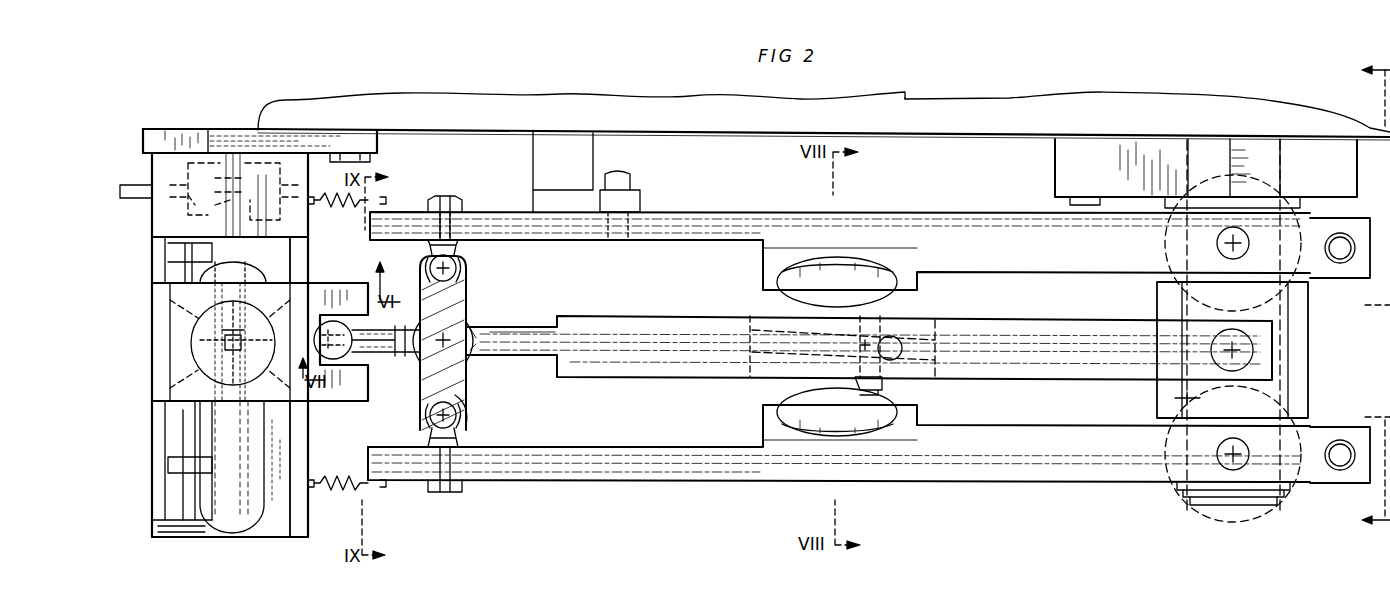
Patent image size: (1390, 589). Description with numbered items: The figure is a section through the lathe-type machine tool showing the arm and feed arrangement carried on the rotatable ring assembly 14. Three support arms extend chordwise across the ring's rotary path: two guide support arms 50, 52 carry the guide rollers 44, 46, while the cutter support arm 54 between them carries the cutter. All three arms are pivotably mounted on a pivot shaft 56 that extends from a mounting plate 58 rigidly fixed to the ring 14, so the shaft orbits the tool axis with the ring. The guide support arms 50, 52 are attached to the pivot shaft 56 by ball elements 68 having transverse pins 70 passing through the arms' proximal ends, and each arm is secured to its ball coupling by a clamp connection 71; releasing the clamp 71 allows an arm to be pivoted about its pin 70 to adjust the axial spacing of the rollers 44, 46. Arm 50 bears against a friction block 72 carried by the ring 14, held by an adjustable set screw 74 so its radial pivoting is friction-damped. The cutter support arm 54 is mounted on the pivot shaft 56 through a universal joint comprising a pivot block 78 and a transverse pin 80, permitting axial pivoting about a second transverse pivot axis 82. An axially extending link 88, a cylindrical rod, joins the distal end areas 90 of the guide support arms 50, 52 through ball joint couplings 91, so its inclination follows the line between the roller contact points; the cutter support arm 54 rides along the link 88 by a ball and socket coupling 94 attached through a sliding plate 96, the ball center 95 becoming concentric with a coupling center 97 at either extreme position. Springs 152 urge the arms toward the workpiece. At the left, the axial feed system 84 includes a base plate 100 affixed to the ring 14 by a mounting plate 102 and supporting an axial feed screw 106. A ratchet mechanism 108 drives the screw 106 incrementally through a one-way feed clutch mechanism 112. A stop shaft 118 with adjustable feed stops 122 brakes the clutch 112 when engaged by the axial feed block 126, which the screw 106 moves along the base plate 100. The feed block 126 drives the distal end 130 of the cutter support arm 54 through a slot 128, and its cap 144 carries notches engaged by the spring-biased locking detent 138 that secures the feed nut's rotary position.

The annular ring assembly 14 is at (660, 112).
The guide roller 44 is at (790, 287).
The guide roller 46 is at (790, 406).
The guide support arm 50 is at (990, 205).
The guide support arm 52 is at (990, 420).
The cutter support arm 54 is at (990, 318).
The pivot shaft 56 is at (1245, 507).
The mounting plate 58 is at (1334, 182).
The ball element 68 is at (1200, 280).
The transverse pin 70 is at (1222, 245).
The clamp connection 71 is at (1338, 279).
The friction block 72 is at (535, 164).
The set screw 74 is at (636, 178).
The pivot block 78 is at (1200, 397).
The transverse pin 80 is at (1225, 345).
The second transverse pivot axis 82 is at (1228, 352).
The axial feed system 84 is at (148, 378).
The link 88 is at (470, 292).
The distal end area 90 is at (410, 215).
The ball joint coupling 91 is at (468, 416).
The ball and socket coupling 94 is at (467, 363).
The center of ball element 95 is at (490, 355).
The plate 96 is at (508, 333).
The center of ball element 97 is at (425, 268).
The base plate 100 is at (285, 540).
The mounting plate 102 is at (143, 138).
The axial feed screw 106 is at (237, 427).
The ratchet mechanism 108 is at (120, 188).
The feed clutch mechanism 112 is at (152, 213).
The stop shaft 118 is at (185, 270).
The adjustable feed stop 122 is at (168, 465).
The axial feed block 126 is at (178, 318).
The slot 128 is at (368, 366).
The distal end 130 is at (340, 326).
The locking detent 138 is at (205, 342).
The cap 144 is at (178, 385).
The springs 152 is at (365, 488).